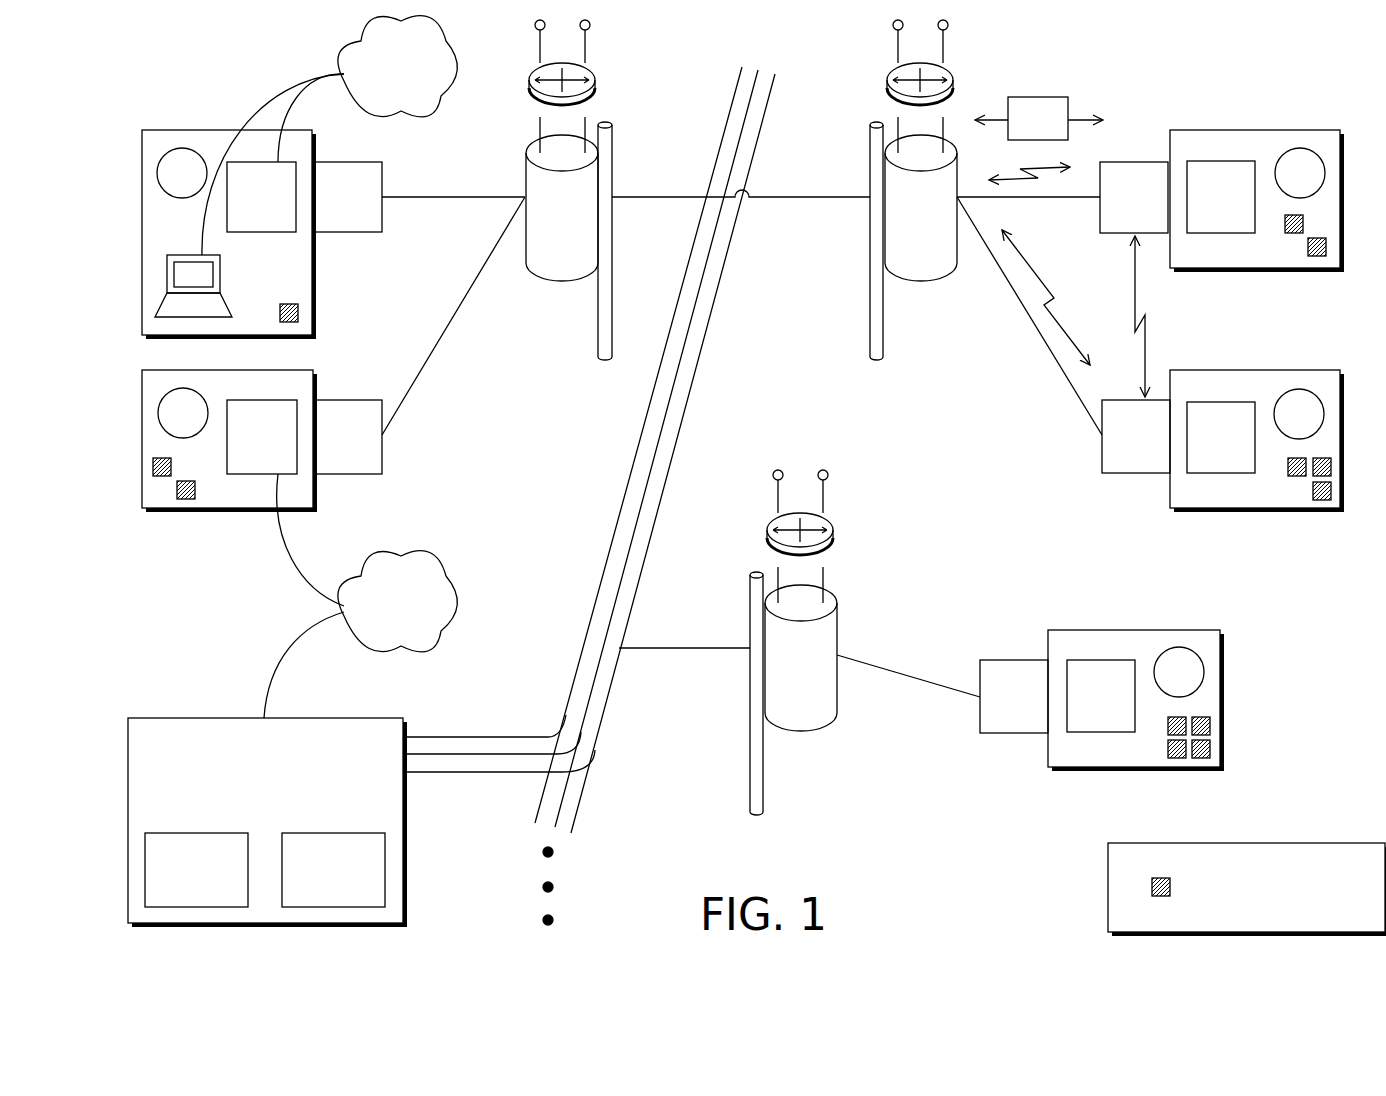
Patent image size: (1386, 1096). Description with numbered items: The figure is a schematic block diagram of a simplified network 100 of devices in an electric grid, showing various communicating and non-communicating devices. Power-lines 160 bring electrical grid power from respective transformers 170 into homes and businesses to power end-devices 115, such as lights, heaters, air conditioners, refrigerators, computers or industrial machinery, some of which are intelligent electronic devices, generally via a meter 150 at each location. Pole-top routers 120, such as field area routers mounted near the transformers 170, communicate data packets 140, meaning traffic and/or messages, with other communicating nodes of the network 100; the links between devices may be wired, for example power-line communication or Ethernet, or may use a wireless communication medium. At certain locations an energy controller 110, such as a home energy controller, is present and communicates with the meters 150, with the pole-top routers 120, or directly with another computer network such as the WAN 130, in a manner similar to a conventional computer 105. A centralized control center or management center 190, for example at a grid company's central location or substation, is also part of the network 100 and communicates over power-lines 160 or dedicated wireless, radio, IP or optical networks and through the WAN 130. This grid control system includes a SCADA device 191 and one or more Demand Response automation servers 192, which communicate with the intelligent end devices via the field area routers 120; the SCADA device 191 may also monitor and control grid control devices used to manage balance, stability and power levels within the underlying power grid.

The network 100 is at (1292, 85).
The computer 105 is at (224, 302).
The energy controller 110 is at (244, 220).
The end-device 115 is at (769, 574).
The pole-top router 120 is at (591, 70).
The WAN 130 is at (397, 334).
The data packets 140 is at (1020, 131).
The meter 150 is at (329, 220).
The power-line 160 is at (479, 199).
The transformer 170 is at (568, 276).
The centralized control center or management center 190 is at (247, 817).
The SCADA device 191 is at (178, 897).
The Demand Response automation server 192 is at (315, 897).